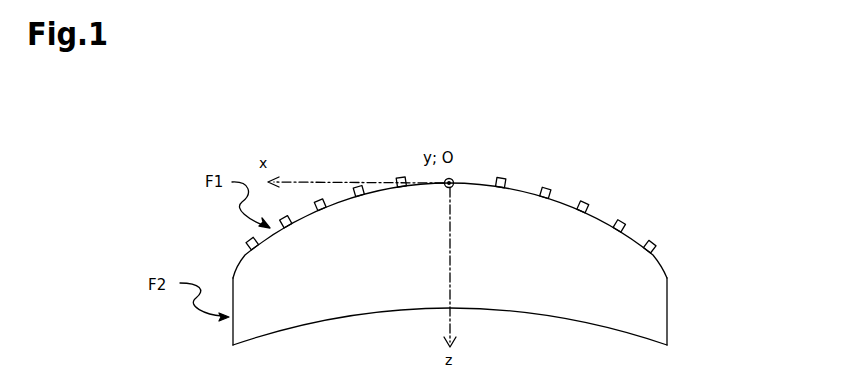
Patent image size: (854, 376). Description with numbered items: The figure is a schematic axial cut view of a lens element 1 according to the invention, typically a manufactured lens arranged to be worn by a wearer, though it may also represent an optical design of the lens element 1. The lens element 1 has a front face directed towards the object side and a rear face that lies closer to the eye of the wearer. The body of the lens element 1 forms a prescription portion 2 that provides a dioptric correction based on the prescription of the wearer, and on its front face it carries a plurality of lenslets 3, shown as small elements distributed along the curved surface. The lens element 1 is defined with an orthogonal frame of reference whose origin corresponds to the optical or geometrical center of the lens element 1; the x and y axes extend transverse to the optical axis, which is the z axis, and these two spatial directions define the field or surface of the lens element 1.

The lens element 1 is at (681, 313).
The prescription portion 2 is at (525, 190).
The lenslets 3 is at (587, 201).